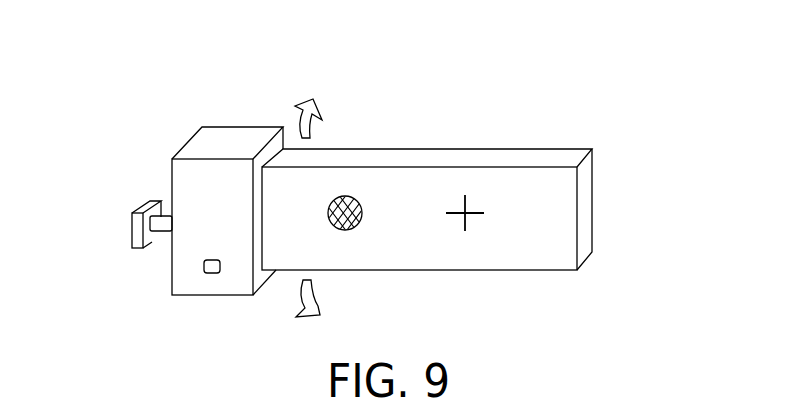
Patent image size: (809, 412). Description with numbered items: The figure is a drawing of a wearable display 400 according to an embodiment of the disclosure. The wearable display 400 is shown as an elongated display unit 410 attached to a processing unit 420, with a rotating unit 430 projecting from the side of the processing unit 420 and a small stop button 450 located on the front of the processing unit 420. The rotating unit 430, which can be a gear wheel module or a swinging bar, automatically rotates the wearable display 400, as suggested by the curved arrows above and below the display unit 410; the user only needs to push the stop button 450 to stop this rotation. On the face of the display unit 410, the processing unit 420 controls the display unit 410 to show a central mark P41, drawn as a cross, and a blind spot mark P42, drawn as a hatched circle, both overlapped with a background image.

The wearable display 400 is at (795, 126).
The display unit 410 is at (427, 271).
The processing unit 420 is at (183, 295).
The rotating unit 430 is at (131, 231).
The stop button 450 is at (209, 273).
The central mark P41 is at (452, 212).
The blind spot mark P42 is at (343, 197).